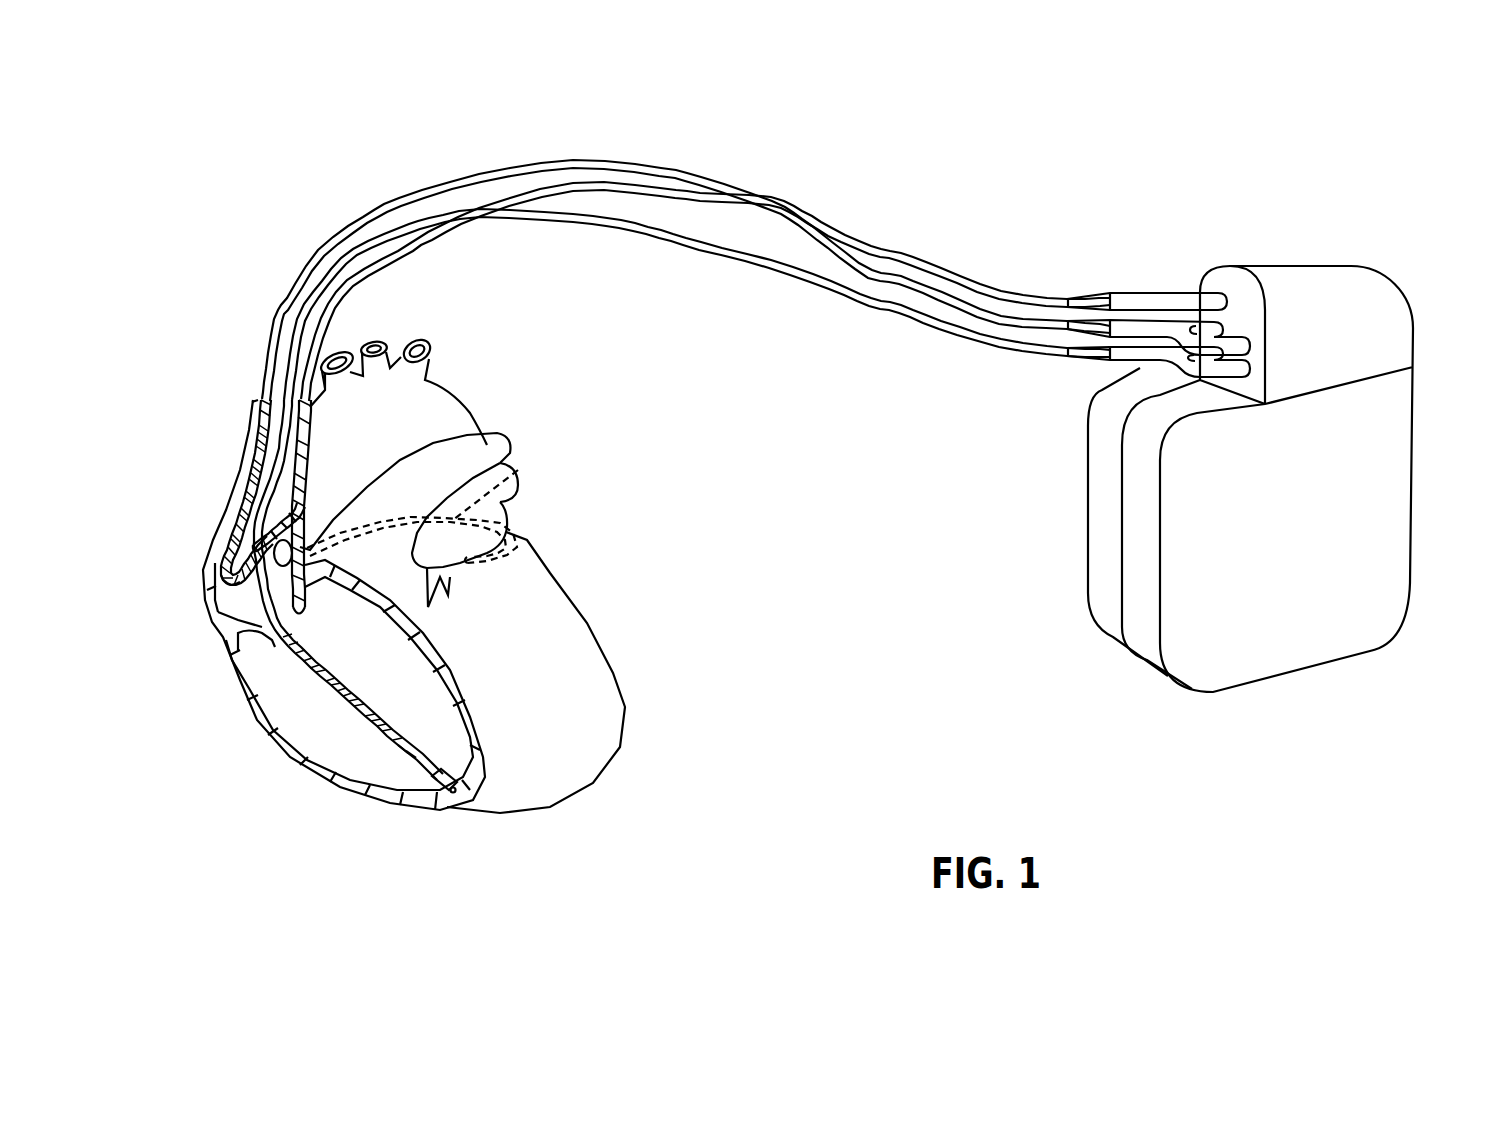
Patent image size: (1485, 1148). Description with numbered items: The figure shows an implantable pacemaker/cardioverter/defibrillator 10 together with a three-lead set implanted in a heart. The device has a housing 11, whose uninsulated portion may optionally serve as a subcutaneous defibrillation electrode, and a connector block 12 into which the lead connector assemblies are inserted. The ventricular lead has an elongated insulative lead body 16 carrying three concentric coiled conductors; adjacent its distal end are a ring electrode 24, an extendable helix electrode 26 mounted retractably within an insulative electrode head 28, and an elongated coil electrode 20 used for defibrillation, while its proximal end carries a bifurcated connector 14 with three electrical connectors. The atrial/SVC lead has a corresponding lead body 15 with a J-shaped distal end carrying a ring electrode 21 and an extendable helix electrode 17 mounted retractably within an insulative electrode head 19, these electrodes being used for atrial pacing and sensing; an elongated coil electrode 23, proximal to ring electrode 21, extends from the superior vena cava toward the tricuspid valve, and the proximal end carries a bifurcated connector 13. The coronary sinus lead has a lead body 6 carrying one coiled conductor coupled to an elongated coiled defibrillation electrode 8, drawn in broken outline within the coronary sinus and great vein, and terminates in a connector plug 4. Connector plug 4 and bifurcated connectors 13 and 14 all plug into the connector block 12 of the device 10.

The connector plug 4 is at (1145, 300).
The lead body 6 is at (965, 281).
The coiled defibrillation electrode 8 is at (518, 470).
The implantable pacemaker/cardioverter/defibrillator 10 is at (1278, 465).
The housing 11 is at (1195, 622).
The connector block 12 is at (1322, 268).
The bifurcated connector 13 is at (1158, 327).
The bifurcated connector 14 is at (1128, 360).
The lead body 15 is at (1009, 318).
The lead body 16 is at (973, 337).
The extendable helix electrode 17 is at (294, 514).
The insulative electrode head 19 is at (278, 524).
The elongated coil electrode 20 is at (343, 705).
The ring electrode 21 is at (250, 553).
The elongated coil electrode 23 is at (252, 465).
The ring electrode 24 is at (407, 757).
The extendable helix electrode 26 is at (451, 793).
The insulative electrode head 28 is at (425, 768).